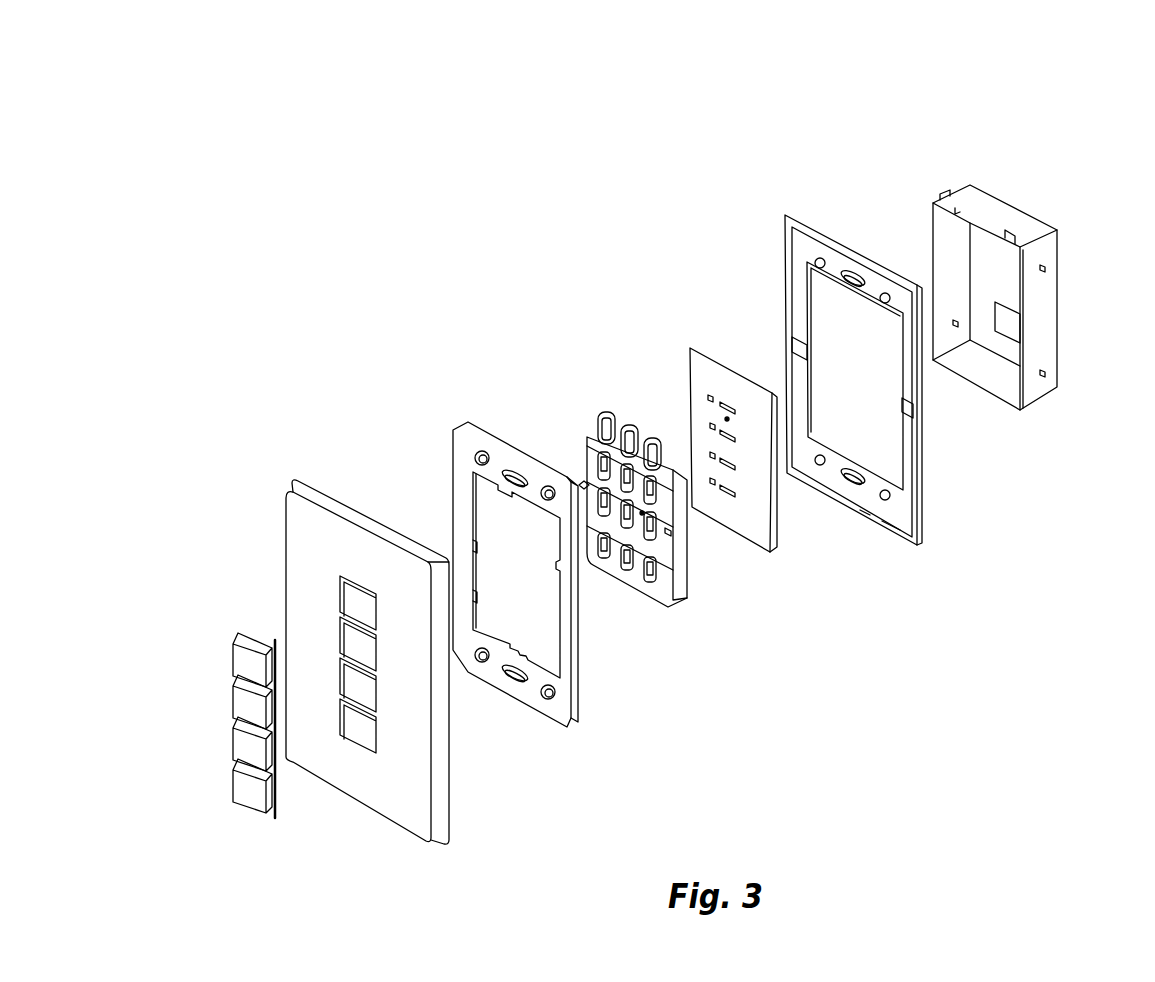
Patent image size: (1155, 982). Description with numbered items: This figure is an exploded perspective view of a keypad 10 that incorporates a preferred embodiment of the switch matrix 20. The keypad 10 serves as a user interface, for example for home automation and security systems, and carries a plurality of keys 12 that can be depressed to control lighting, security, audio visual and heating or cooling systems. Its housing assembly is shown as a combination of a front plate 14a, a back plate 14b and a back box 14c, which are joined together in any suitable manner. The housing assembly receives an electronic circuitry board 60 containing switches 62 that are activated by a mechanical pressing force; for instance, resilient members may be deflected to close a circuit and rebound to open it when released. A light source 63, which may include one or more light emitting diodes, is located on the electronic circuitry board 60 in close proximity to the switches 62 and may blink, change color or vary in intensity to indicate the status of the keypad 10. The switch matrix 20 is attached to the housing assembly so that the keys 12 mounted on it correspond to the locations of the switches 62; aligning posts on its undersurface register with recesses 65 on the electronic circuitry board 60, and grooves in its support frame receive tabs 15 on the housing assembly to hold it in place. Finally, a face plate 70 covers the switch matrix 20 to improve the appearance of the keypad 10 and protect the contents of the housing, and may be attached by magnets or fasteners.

The keypad 10 is at (836, 145).
The keys 12 is at (233, 648).
The front plate 14a is at (578, 725).
The back plate 14b is at (925, 525).
The back box 14c is at (1043, 403).
The tabs 15 is at (560, 600).
The switch matrix 20 is at (600, 413).
The electronic circuitry board 60 is at (690, 350).
The switches 62 is at (735, 497).
The light source 63 is at (712, 490).
The recesses 65 is at (729, 419).
The face plate 70 is at (286, 490).